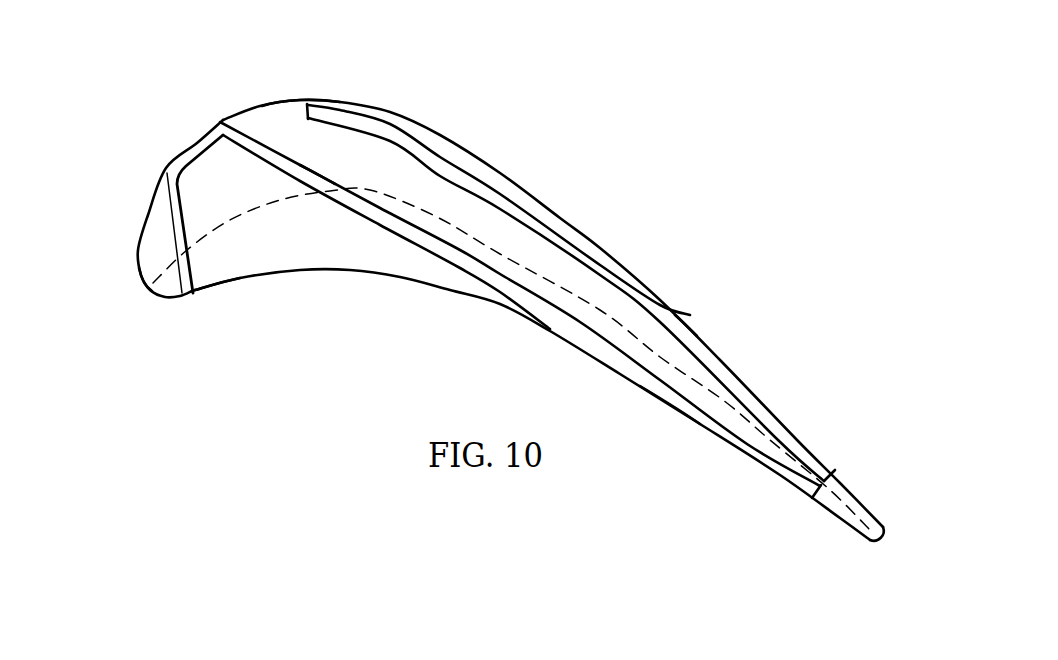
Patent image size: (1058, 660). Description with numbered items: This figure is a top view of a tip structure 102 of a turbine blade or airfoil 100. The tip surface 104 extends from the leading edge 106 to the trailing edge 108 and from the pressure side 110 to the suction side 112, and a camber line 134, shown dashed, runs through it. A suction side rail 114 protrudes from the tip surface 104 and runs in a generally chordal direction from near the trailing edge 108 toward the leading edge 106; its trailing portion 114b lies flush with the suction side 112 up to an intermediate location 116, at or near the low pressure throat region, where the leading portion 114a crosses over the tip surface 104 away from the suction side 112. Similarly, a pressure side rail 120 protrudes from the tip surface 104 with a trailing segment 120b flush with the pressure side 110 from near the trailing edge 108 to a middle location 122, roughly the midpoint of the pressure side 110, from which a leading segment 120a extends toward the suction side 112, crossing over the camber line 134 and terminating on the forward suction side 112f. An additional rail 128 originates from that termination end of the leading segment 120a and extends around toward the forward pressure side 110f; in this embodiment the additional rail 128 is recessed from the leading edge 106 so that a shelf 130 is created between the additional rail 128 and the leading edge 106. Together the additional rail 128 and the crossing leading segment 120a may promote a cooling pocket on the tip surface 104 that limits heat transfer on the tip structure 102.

The airfoil 100 is at (673, 150).
The tip structure 102 is at (497, 330).
The tip surface 104 is at (213, 162).
The leading edge 106 is at (146, 304).
The trailing edge 108 is at (880, 548).
The pressure side 110 is at (489, 305).
The forward pressure side 110f is at (210, 296).
The suction side 112 is at (564, 219).
The forward suction side 112f is at (286, 102).
The suction side rail 114 is at (477, 170).
The leading portion 114a is at (398, 132).
The trailing portion 114b is at (801, 434).
The intermediate location 116 is at (698, 309).
The pressure side rail 120 is at (438, 268).
The leading segment 120a is at (338, 204).
The trailing segment 120b is at (745, 452).
The middle location 122 is at (665, 425).
The additional rail 128 is at (175, 203).
The shelf 130 is at (146, 214).
The camber line 134 is at (230, 226).